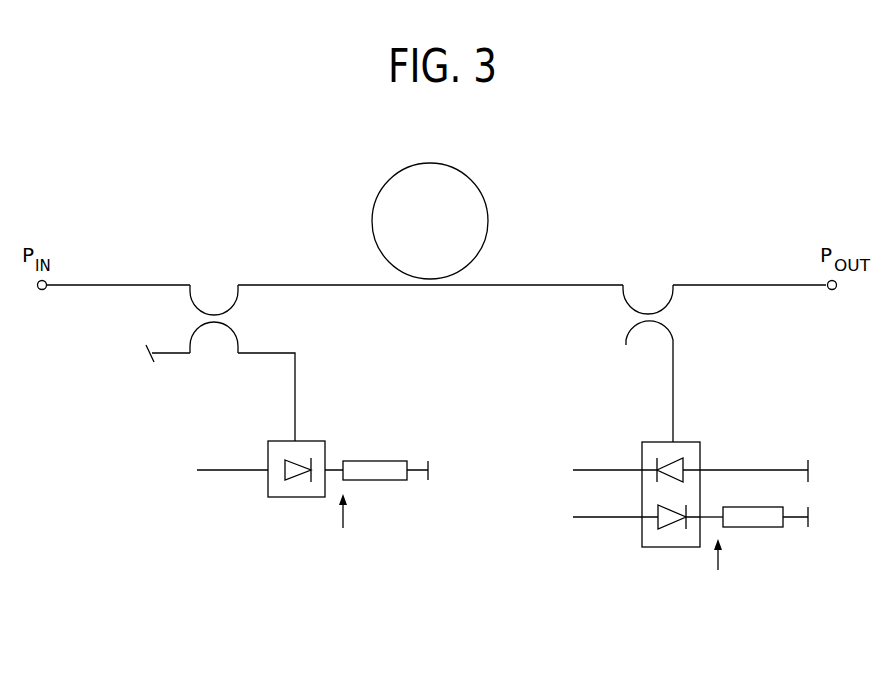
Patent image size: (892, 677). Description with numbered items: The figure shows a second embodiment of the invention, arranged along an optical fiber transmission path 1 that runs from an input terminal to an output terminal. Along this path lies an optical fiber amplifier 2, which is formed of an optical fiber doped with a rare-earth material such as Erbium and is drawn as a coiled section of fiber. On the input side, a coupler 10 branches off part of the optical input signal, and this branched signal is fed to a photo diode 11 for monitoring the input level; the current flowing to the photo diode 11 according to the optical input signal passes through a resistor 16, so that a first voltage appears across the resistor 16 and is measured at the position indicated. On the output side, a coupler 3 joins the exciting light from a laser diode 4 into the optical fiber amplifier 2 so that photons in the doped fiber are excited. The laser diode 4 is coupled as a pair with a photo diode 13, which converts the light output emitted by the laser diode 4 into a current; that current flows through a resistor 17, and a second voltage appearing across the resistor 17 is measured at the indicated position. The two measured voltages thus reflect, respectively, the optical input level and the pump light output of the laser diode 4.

The optical fiber transmission path 1 is at (348, 286).
The optical fiber amplifier 2 is at (485, 205).
The coupler 3 is at (673, 295).
The laser diode 4 is at (672, 465).
The coupler 10 is at (190, 291).
The photo diode unit 11 is at (275, 441).
The photo diode 13 is at (662, 522).
The resistor 16 is at (375, 482).
The resistor 17 is at (753, 528).